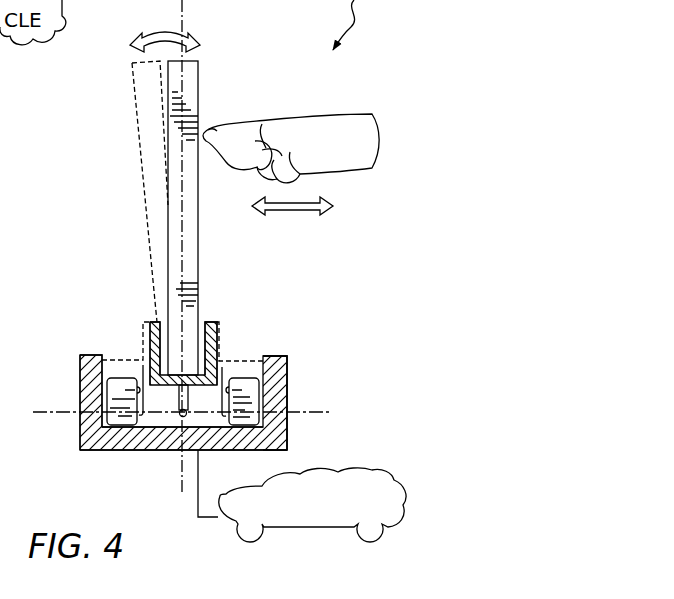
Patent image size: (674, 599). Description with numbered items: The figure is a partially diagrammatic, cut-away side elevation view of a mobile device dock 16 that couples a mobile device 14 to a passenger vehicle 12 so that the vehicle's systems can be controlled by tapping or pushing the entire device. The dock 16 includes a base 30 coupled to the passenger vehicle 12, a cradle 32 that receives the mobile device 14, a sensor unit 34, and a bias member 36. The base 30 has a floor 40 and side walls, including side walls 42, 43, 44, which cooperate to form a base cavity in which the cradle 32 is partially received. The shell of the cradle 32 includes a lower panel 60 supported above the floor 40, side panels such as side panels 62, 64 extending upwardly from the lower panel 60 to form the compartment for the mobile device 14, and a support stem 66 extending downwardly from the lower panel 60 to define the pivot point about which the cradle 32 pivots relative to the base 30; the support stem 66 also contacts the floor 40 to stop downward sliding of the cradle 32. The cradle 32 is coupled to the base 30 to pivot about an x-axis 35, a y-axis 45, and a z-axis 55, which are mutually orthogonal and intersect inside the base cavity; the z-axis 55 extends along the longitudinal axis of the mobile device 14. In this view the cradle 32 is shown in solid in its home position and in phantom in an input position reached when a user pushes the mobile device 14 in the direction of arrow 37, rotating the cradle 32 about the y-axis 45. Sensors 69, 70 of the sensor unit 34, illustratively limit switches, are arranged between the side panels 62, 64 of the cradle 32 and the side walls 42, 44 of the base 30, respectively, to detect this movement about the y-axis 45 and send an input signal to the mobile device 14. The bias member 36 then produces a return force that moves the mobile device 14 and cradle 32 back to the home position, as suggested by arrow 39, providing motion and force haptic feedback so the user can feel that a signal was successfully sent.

The passenger vehicle 12 is at (335, 470).
The mobile device 14 is at (200, 77).
The mobile device dock 16 is at (288, 350).
The base 30 is at (288, 365).
The cradle 32 is at (221, 324).
The sensor unit 34 is at (262, 388).
The x-axis 35 is at (325, 412).
The bias member 36 is at (233, 350).
The arrow 37 is at (293, 213).
The arrow 39 is at (165, 31).
The floor 40 is at (110, 453).
The side wall 42 is at (78, 360).
The side wall 43 is at (122, 353).
The side wall 44 is at (290, 395).
The y-axis 45 is at (178, 412).
The z-axis 55 is at (182, 22).
The lower panel 60 is at (204, 402).
The side panel 62 is at (153, 322).
The side panel 64 is at (212, 322).
The support stem 66 is at (143, 427).
The sensor 69 is at (120, 415).
The sensor 70 is at (243, 422).